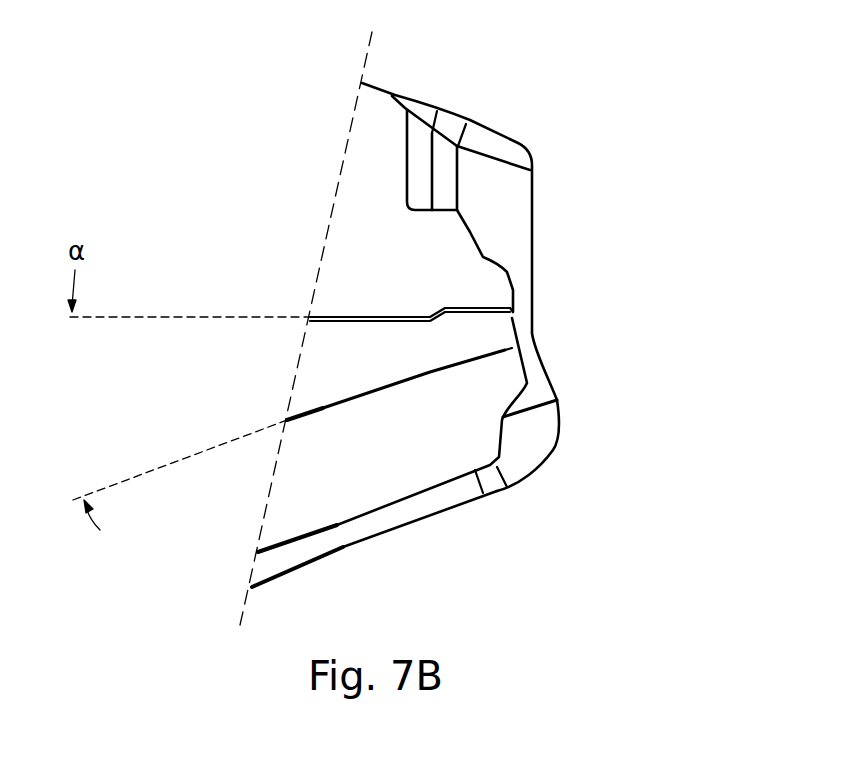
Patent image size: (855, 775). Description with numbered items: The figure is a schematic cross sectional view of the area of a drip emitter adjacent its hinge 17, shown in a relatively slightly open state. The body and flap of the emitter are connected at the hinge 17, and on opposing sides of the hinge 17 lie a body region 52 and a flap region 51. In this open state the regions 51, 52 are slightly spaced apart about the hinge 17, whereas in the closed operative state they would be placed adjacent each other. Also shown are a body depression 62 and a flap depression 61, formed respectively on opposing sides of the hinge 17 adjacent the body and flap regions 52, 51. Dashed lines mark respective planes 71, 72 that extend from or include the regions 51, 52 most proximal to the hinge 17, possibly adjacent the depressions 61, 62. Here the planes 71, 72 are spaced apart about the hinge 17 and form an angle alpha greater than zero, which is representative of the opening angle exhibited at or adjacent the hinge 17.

The hinge 17 is at (562, 313).
The flap region 51 is at (330, 405).
The body region 52 is at (320, 320).
The flap depression 61 is at (482, 356).
The body depression 62 is at (490, 312).
The plane 71 is at (153, 470).
The plane 72 is at (147, 316).